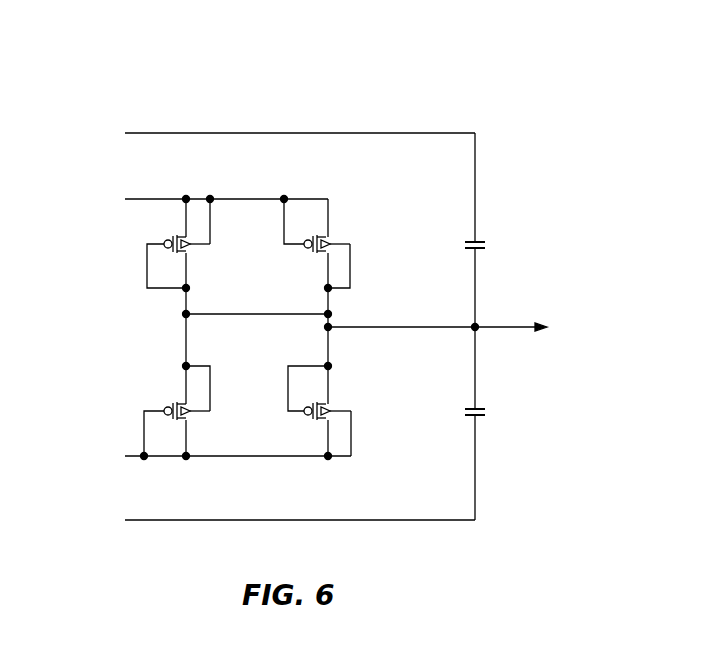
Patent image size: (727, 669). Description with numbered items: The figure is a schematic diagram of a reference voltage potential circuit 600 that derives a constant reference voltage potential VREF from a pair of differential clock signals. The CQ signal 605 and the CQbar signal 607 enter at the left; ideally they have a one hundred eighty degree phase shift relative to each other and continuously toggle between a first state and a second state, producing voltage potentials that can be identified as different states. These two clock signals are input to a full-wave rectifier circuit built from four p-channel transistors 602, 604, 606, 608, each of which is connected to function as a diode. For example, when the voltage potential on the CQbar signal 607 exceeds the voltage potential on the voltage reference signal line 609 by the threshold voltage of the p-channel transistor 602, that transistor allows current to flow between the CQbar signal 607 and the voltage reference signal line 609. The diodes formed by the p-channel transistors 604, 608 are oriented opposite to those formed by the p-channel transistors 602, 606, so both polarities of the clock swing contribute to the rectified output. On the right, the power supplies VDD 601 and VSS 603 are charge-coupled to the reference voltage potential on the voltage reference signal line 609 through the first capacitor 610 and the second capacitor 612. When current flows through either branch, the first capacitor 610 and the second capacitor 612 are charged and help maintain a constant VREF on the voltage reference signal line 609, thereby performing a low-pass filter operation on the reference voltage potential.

The reference voltage potential circuit 600 is at (488, 64).
The power supply VDD 601 is at (352, 133).
The p-channel transistor 602 is at (174, 235).
The power supply VSS 603 is at (352, 520).
The p-channel transistor 604 is at (316, 254).
The CQ signal 605 is at (238, 457).
The p-channel transistor 606 is at (174, 402).
The CQbar signal 607 is at (238, 199).
The p-channel transistor 608 is at (316, 421).
The voltage reference signal line 609 is at (503, 326).
The capacitor C1 610 is at (480, 240).
The capacitor C2 612 is at (480, 407).